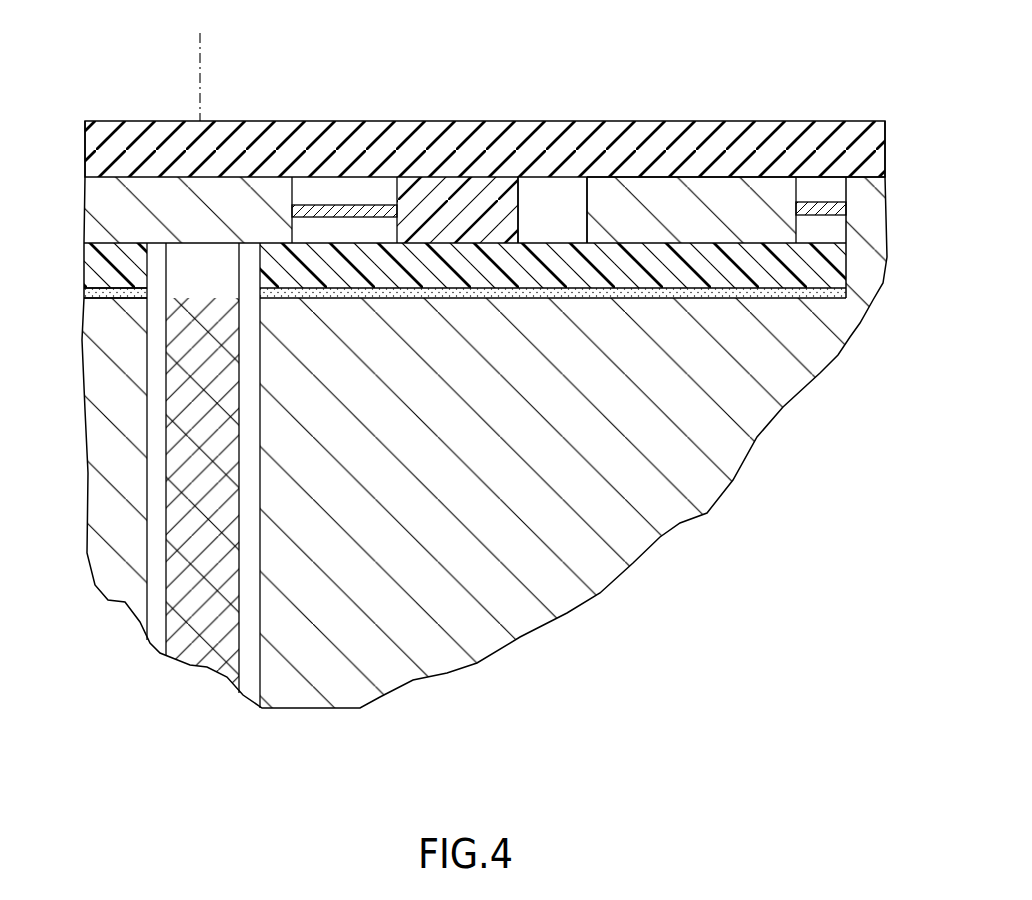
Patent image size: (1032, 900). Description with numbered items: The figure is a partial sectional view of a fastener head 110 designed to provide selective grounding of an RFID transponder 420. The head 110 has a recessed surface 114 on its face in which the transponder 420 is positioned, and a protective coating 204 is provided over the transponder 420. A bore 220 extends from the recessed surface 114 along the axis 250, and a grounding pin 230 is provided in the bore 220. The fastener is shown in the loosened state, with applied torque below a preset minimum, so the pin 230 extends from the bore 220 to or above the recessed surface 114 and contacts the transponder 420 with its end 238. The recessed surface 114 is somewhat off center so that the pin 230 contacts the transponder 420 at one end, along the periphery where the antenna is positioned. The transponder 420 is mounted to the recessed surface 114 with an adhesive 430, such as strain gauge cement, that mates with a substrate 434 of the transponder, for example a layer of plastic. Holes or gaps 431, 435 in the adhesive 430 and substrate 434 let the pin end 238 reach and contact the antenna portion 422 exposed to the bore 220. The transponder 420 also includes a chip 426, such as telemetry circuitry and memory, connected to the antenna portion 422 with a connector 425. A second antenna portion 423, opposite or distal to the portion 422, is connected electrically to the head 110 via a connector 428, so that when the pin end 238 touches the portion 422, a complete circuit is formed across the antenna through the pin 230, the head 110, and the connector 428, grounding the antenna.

The head 110 is at (733, 482).
The recessed surface 114 is at (155, 300).
The protective coating 204 is at (884, 128).
The bore 220 is at (150, 627).
The grounding pin 230 is at (240, 545).
The pin end 238 is at (207, 243).
The axis 250 is at (200, 48).
The RFID transponder 420 is at (853, 265).
The antenna portion 422 is at (270, 177).
The second antenna portion 423 is at (660, 172).
The connector 425 is at (315, 218).
The chip 426 is at (518, 222).
The connector 428 is at (827, 194).
The adhesive 430 is at (410, 298).
The gap 431 is at (260, 303).
The substrate 434 is at (527, 273).
The gap 435 is at (254, 258).